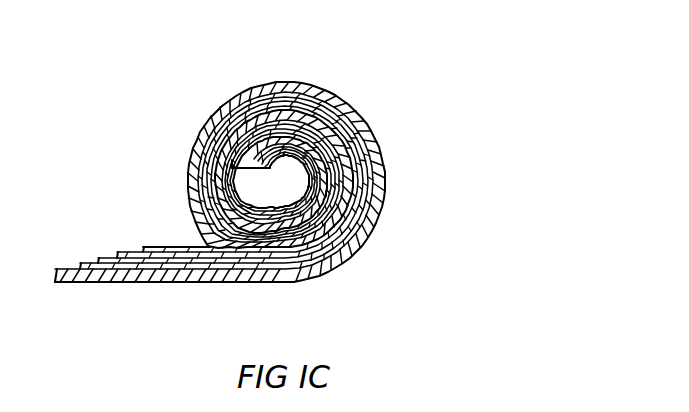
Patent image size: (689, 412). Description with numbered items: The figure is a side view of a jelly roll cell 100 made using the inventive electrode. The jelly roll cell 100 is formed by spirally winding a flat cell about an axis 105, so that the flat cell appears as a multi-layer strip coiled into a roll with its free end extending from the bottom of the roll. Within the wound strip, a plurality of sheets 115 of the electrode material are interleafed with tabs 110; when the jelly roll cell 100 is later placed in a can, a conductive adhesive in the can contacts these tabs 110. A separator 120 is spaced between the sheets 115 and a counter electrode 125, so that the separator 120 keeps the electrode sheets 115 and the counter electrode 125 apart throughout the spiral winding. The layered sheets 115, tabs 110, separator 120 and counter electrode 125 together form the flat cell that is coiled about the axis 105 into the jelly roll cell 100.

The jelly roll cell 100 is at (239, 177).
The axis 105 is at (283, 171).
The tabs 110 is at (363, 172).
The sheets 115 is at (308, 105).
The separator 120 is at (360, 133).
The counter electrode 125 is at (370, 228).